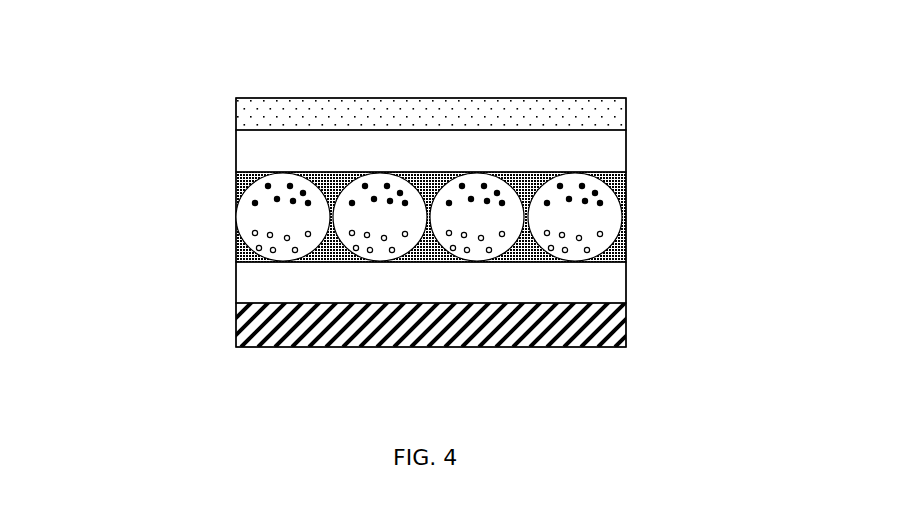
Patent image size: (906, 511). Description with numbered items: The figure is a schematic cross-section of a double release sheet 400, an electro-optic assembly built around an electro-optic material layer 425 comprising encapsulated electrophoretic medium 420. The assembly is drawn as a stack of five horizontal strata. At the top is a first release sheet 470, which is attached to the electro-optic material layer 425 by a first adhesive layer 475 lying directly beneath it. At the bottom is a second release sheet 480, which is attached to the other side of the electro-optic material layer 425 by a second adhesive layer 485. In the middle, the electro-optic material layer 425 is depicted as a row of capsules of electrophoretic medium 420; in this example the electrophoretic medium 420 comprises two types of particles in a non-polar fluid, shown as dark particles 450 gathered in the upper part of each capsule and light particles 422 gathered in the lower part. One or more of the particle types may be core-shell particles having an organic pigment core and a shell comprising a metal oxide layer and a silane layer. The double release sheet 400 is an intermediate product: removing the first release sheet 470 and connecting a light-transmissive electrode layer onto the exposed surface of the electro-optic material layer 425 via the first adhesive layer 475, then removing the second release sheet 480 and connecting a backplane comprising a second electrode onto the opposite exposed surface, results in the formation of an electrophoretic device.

The double release sheet 400 is at (305, 75).
The first release sheet 470 is at (237, 113).
The first adhesive layer 475 is at (431, 151).
The electro-optic material layer 425 is at (411, 140).
The electrophoretic medium 420 is at (335, 140).
The black pigment particles 450 is at (493, 185).
The white pigment particles 422 is at (245, 254).
The second adhesive layer 485 is at (431, 282).
The second release sheet 480 is at (240, 326).